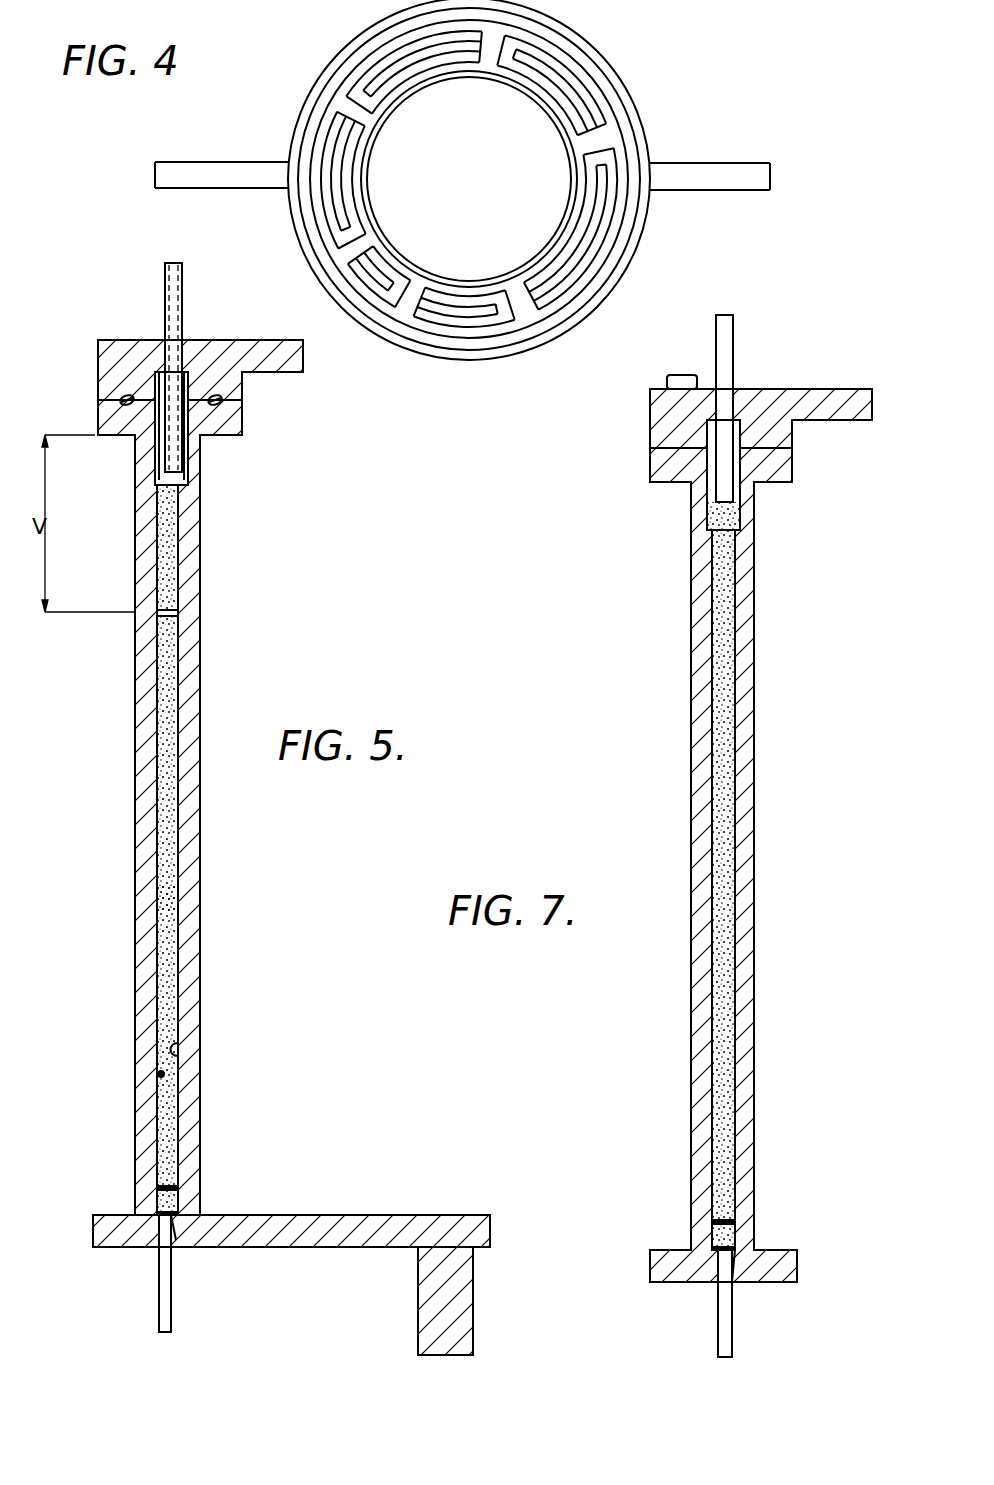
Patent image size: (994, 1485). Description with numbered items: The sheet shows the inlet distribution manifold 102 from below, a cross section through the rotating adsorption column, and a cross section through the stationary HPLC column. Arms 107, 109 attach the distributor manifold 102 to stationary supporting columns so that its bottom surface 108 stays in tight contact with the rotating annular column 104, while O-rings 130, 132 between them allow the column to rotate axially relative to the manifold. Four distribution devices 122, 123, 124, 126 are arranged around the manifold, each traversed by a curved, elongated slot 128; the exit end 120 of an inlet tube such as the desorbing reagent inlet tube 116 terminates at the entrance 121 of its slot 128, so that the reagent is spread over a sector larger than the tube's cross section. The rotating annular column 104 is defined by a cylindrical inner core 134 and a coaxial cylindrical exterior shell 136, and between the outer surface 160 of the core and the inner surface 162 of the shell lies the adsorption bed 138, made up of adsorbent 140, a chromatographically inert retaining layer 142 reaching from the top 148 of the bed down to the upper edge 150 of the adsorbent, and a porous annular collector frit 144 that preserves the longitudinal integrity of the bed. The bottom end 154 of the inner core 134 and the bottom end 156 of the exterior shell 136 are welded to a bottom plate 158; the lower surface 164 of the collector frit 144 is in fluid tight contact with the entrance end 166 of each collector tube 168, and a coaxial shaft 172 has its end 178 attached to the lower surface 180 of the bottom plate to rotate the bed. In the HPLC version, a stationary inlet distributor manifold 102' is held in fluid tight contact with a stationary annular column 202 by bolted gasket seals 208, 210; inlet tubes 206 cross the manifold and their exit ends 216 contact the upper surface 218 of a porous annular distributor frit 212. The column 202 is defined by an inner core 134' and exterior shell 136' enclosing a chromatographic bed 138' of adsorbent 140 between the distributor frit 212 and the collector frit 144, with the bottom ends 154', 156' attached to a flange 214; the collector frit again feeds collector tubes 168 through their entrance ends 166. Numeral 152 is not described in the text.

In FIG. 4, the inlet distribution manifold 102 is at (492, 180).
In FIG. 5, the inlet distribution manifold 102 is at (169, 381).
In FIG. 7, the stationary inlet distributor manifold 102' is at (761, 816).
In FIG. 5, the rotating annular column 104 is at (135, 818).
In FIG. 4, the arm 107 is at (212, 162).
In FIG. 4, the bottom surface 108 is at (302, 105).
In FIG. 4, the arm 109 is at (710, 163).
In FIG. 5, the desorbing reagent inlet tube 116 is at (165, 276).
In FIG. 5, the exit end 120 is at (186, 347).
In FIG. 5, the entrance 121 is at (163, 353).
In FIG. 4, the distribution device 122 is at (527, 38).
In FIG. 4, the distribution device 123 is at (487, 327).
In FIG. 4, the distribution device 124 is at (354, 274).
In FIG. 5, the distribution device 124 is at (186, 460).
In FIG. 4, the distribution device 126 is at (382, 50).
In FIG. 4, the curved elongated slot 128 is at (335, 217).
In FIG. 5, the curved elongated slot 128 is at (177, 472).
In FIG. 5, the O-ring 130 is at (105, 404).
In FIG. 5, the O-ring 132 is at (225, 400).
In FIG. 5, the cylindrical inner core 134 is at (200, 777).
In FIG. 7, the cylindrical inner core 134' is at (788, 866).
In FIG. 5, the cylindrical exterior shell 136 is at (103, 930).
In FIG. 7, the cylindrical exterior shell 136' is at (653, 830).
In FIG. 5, the adsorption bed 138 is at (118, 903).
In FIG. 7, the chromatographic bed 138' is at (774, 875).
In FIG. 5, the adsorbent 140 is at (165, 998).
In FIG. 7, the adsorbent 140 is at (722, 668).
In FIG. 5, the chromatographically inert retaining layer 142 is at (175, 590).
In FIG. 5, the porous annular collector frit 144 is at (178, 1190).
In FIG. 7, the porous annular collector frit 144 is at (737, 1225).
In FIG. 5, the top 148 is at (120, 400).
In FIG. 5, the upper edge 150 is at (175, 614).
In FIG. 5, the packing bed 152 is at (170, 902).
In FIG. 5, the bottom end 154 is at (218, 1199).
In FIG. 7, the bottom end 154' is at (775, 1235).
In FIG. 5, the bottom end 156 is at (101, 1187).
In FIG. 7, the bottom end 156' is at (650, 1215).
In FIG. 5, the bottom plate 158 is at (93, 1230).
In FIG. 5, the outer surface 160 is at (178, 1050).
In FIG. 5, the inner surface 162 is at (160, 1074).
In FIG. 5, the lower surface 164 is at (172, 1245).
In FIG. 7, the lower surface 164 is at (735, 1275).
In FIG. 5, the entrance end 166 is at (158, 1250).
In FIG. 7, the entrance end 166 is at (718, 1285).
In FIG. 5, the collector tube 168 is at (158, 1308).
In FIG. 7, the collector tube 168 is at (718, 1333).
In FIG. 5, the coaxial shaft 172 is at (473, 1340).
In FIG. 5, the end 178 is at (490, 1255).
In FIG. 5, the lower surface 180 is at (300, 1250).
In FIG. 7, the stationary annular column 202 is at (691, 777).
In FIG. 7, the inlet tube 206 is at (733, 348).
In FIG. 7, the bolted gasket seal 208 is at (650, 448).
In FIG. 7, the bolted gasket seal 210 is at (770, 450).
In FIG. 7, the porous annular distributor frit 212 is at (740, 520).
In FIG. 7, the flange 214 is at (650, 1265).
In FIG. 7, the exit end 216 is at (718, 485).
In FIG. 7, the upper surface 218 is at (707, 500).